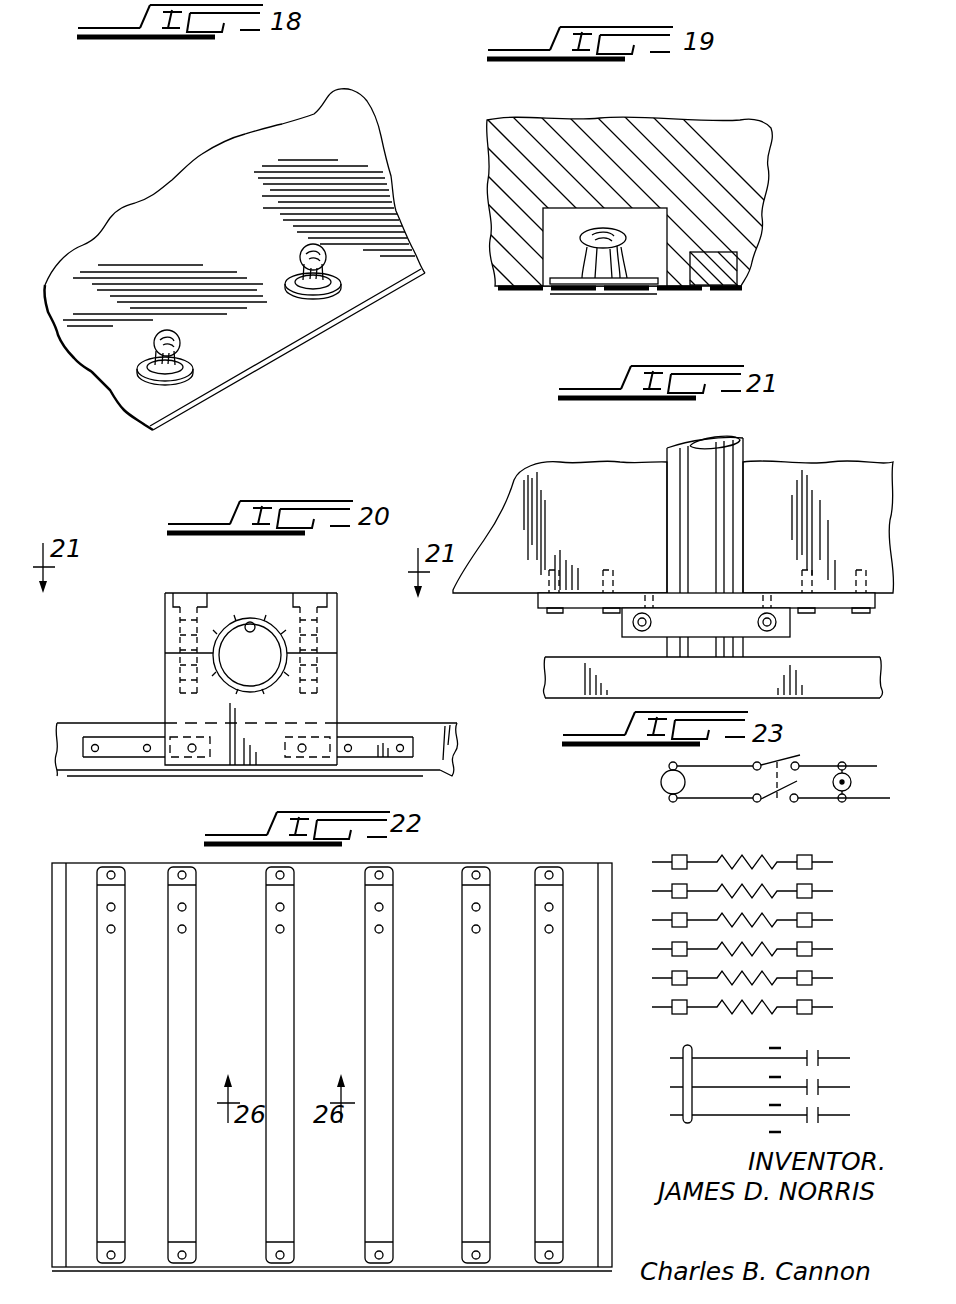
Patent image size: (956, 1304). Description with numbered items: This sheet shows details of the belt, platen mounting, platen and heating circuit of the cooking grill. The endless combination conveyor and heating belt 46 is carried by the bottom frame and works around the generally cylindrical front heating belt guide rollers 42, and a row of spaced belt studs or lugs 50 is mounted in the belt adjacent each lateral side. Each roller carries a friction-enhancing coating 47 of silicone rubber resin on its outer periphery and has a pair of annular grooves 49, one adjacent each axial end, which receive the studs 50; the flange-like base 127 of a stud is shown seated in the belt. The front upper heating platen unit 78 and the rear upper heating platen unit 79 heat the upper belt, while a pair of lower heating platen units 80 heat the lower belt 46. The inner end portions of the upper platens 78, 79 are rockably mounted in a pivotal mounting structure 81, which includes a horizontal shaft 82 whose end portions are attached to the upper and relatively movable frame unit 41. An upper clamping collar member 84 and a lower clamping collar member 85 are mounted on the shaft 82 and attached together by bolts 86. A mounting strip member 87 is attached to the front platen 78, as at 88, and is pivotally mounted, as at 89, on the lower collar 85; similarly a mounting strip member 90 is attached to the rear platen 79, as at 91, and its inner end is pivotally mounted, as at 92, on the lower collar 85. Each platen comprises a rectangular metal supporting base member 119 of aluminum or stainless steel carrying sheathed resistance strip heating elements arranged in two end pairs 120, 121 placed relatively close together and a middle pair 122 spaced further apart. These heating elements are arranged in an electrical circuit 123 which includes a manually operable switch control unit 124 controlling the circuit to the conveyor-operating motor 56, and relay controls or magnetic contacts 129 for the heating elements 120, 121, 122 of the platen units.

In FIG. 18, the endless combination conveyor and heating belt 46 is at (358, 127).
In FIG. 19, the endless combination conveyor and heating belt 46 is at (723, 297).
In FIG. 18, the belt studs or lugs 50 is at (308, 254).
In FIG. 19, the belt studs or lugs 50 is at (622, 233).
In FIG. 18, the flange 127 is at (335, 295).
In FIG. 19, the flange 127 is at (657, 268).
In FIG. 19, the front heating belt guide rollers 42 is at (750, 160).
In FIG. 19, the friction-enhancing coating 47 is at (718, 268).
In FIG. 19, the annular grooves 49 is at (553, 262).
In FIG. 20, the front upper heating platen unit 78 is at (97, 718).
In FIG. 21, the front upper heating platen unit 78 is at (533, 476).
In FIG. 22, the front upper heating platen unit 78 is at (513, 860).
In FIG. 20, the rear upper heating platen unit 79 is at (419, 718).
In FIG. 21, the rear upper heating platen unit 79 is at (839, 479).
In FIG. 21, the lower heating platen units 80 is at (576, 483).
In FIG. 20, the pivotal mounting structure 81 is at (341, 622).
In FIG. 21, the pivotal mounting structure 81 is at (790, 455).
In FIG. 20, the horizontal shaft 82 is at (250, 622).
In FIG. 21, the horizontal shaft 82 is at (683, 456).
In FIG. 20, the upper clamping collar member 84 is at (281, 603).
In FIG. 21, the upper clamping collar member 84 is at (779, 626).
In FIG. 20, the lower clamping collar member 85 is at (330, 683).
In FIG. 20, the bolts 86 is at (190, 600).
In FIG. 21, the bolts 86 is at (641, 629).
In FIG. 20, the mounting strip member 87 is at (130, 757).
In FIG. 21, the mounting strip member 87 is at (586, 609).
In FIG. 20, the attachment of mounting strip member 88 is at (95, 753).
In FIG. 21, the attachment of mounting strip member 88 is at (558, 615).
In FIG. 20, the pivotal mounting 89 is at (193, 753).
In FIG. 21, the mounting strip member 90 is at (833, 610).
In FIG. 20, the attachment of mounting strip member 91 is at (407, 753).
In FIG. 21, the attachment of mounting strip member 91 is at (866, 609).
In FIG. 20, the pivotal mounting 92 is at (307, 750).
In FIG. 21, the upper and relatively movable frame unit 41 is at (856, 689).
In FIG. 23, the conveyor-operating motor 56 is at (661, 782).
In FIG. 23, the electrical circuit 123 is at (722, 801).
In FIG. 23, the manually operable switch control unit 124 is at (777, 752).
In FIG. 22, the end pair of resistance strip heating elements 120 is at (184, 998).
In FIG. 23, the end pair of resistance strip heating elements 120 is at (772, 888).
In FIG. 22, the end pair of resistance strip heating elements 121 is at (551, 1022).
In FIG. 23, the end pair of resistance strip heating elements 121 is at (777, 979).
In FIG. 22, the middle pair of resistance strip heating elements 122 is at (379, 1006).
In FIG. 23, the middle pair of resistance strip heating elements 122 is at (772, 948).
In FIG. 22, the supporting base member 119 is at (586, 1194).
In FIG. 23, the relay controls or magnetic contacts 129 is at (820, 1056).